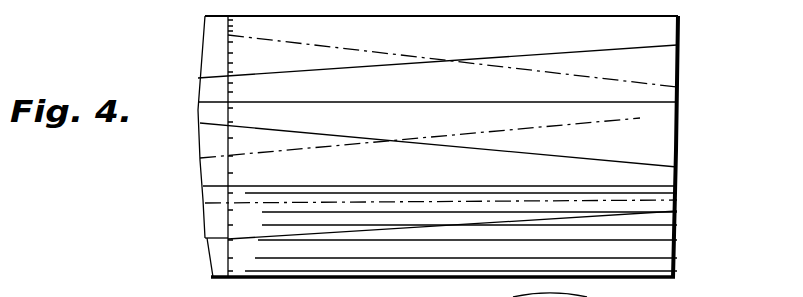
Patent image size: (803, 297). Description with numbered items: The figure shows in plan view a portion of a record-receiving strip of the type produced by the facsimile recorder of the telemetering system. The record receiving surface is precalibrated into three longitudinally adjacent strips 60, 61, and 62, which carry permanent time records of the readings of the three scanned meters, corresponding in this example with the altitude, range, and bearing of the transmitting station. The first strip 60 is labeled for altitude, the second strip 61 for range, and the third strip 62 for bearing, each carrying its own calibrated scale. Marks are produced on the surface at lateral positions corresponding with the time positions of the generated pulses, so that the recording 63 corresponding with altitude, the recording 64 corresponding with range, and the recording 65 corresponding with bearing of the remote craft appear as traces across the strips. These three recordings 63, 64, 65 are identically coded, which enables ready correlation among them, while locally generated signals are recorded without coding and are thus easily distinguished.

The longitudinally adjacent strip 60 is at (645, 24).
The longitudinally adjacent strip 61 is at (212, 165).
The longitudinally adjacent strip 62 is at (220, 248).
The recording corresponding with altitude 63 is at (228, 35).
The recording corresponding with range 64 is at (642, 119).
The recording corresponding with bearing 65 is at (650, 200).